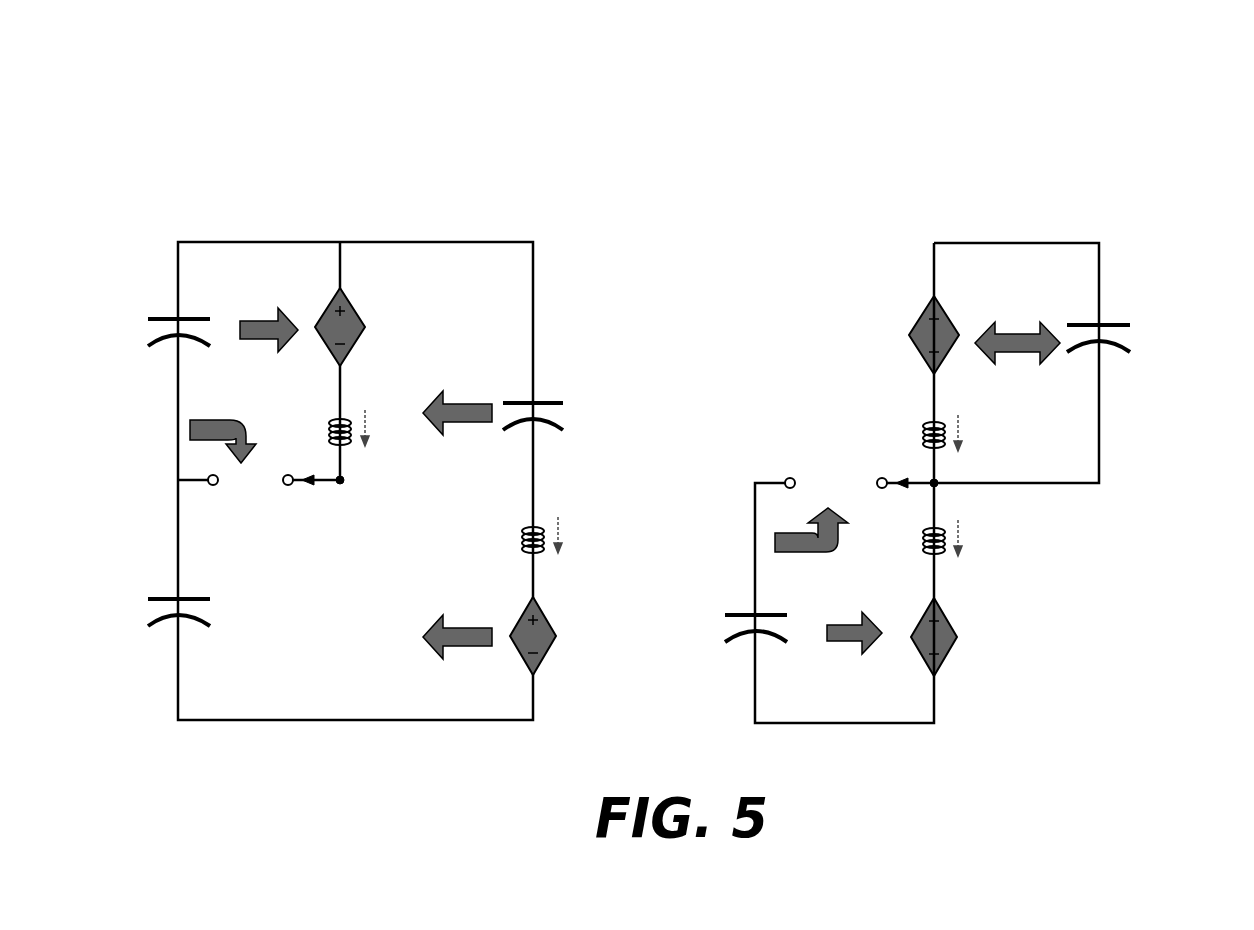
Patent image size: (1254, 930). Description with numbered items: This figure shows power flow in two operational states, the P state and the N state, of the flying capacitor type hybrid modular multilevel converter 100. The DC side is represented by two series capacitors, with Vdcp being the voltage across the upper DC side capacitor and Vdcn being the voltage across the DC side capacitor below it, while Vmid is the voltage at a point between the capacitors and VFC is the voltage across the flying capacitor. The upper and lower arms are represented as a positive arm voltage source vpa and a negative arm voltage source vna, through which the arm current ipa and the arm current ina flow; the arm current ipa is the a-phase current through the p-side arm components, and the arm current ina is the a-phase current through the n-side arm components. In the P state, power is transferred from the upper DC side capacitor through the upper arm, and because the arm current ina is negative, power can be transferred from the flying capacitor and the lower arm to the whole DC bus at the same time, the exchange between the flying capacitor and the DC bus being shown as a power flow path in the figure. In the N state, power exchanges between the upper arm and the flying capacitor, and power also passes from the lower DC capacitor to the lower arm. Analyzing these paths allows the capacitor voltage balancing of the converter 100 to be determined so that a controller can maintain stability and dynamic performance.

The flying capacitor type hybrid modular multilevel converter 100 is at (152, 168).
The voltage across the upper DC side capacitor Vdcp is at (165, 313).
The voltage across the DC side capacitor Vdcn is at (453, 602).
The voltage across the flying capacitor VFC is at (839, 377).
The positive arm voltage source vpa is at (637, 331).
The negative arm voltage source vna is at (754, 636).
The arm current ipa is at (661, 430).
The arm current ina is at (759, 539).
The voltage at a point between the capacitors Vmid is at (168, 482).